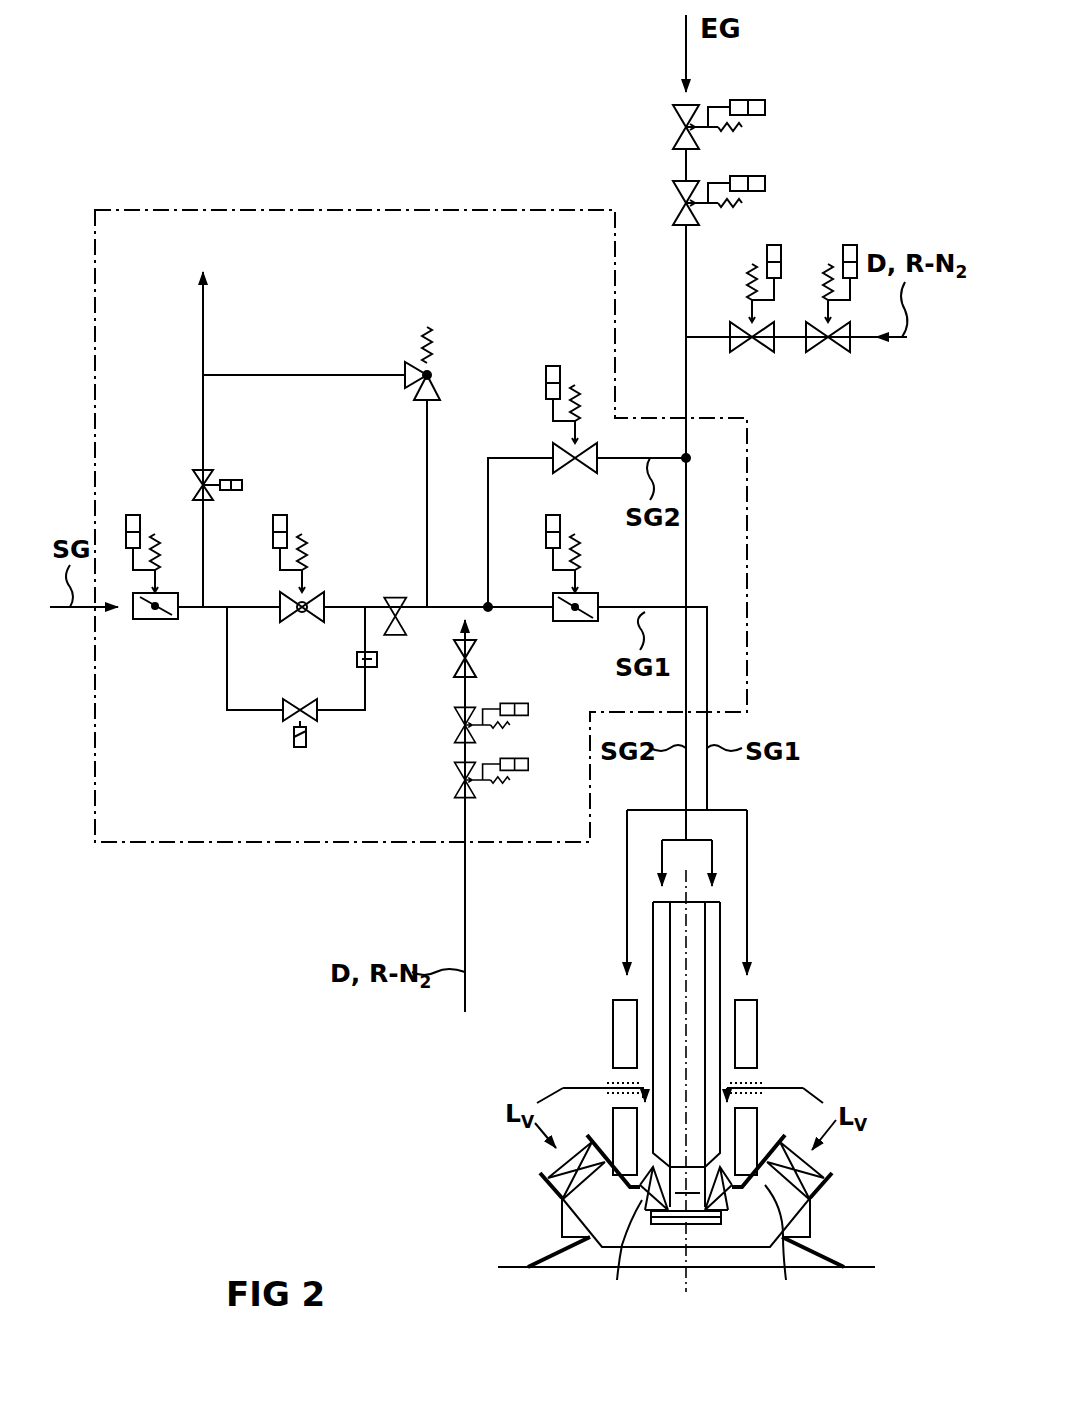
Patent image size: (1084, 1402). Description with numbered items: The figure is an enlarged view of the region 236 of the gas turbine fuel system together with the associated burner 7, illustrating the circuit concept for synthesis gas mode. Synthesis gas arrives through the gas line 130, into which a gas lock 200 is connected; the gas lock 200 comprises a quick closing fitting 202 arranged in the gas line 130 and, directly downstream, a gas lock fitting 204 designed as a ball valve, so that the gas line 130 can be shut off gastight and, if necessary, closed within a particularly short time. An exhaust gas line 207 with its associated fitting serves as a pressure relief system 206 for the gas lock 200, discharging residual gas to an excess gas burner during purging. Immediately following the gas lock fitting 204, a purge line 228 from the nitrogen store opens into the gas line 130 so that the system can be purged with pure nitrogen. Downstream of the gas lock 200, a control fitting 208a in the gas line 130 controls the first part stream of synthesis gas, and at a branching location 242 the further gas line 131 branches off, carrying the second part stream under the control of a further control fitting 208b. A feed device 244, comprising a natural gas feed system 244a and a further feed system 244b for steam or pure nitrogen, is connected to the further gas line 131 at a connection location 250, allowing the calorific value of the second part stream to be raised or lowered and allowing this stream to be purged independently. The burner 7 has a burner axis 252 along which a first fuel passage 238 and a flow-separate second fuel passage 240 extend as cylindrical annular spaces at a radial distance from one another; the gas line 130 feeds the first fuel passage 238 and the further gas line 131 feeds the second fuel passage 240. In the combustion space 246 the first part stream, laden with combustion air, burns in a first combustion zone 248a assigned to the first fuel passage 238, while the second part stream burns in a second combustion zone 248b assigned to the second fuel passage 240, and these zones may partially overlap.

The burner 7 is at (812, 1213).
The gas line 130 is at (193, 612).
The further gas line 131 is at (503, 455).
The gas lock 200 is at (226, 720).
The quick closing fitting 202 is at (142, 622).
The gas lock fitting 204 is at (302, 615).
The pressure relief system 206 is at (427, 443).
The exhaust gas line 207 is at (203, 430).
The control fitting 208a is at (570, 622).
The further control fitting 208b is at (604, 450).
The purge line 228 is at (465, 900).
The region 236 is at (229, 210).
The first fuel passage 238 is at (757, 1020).
The second fuel passage 240 is at (720, 927).
The branching location 242 is at (485, 605).
The feed device 244 is at (832, 219).
The natural gas feed system 244a is at (654, 158).
The further feed system 244b is at (803, 360).
The combustion space 246 is at (712, 1232).
The first combustion zone 248a is at (796, 1247).
The second combustion zone 248b is at (623, 1255).
The connection location 250 is at (688, 462).
The burner axis 252 is at (684, 1290).